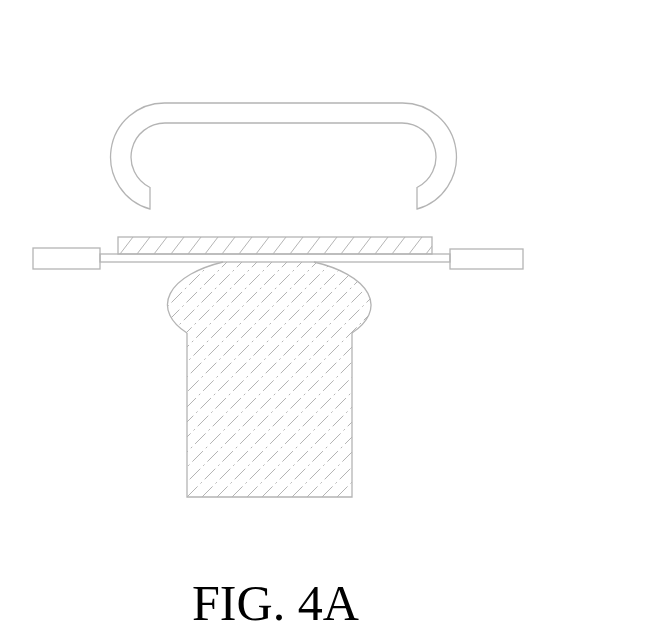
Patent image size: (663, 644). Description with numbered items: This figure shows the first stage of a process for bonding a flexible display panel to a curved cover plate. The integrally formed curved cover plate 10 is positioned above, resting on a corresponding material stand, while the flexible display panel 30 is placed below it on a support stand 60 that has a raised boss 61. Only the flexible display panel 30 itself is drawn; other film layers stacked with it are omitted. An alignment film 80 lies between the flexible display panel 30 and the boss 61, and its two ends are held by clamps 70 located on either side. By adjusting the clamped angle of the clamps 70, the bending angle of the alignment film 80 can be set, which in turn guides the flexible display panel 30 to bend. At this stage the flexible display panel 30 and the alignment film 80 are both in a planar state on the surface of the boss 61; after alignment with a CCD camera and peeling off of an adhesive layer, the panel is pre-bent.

The curved cover plate 10 is at (305, 112).
The flexible display panel 30 is at (313, 246).
The support stand 60 is at (332, 404).
The boss 61 is at (172, 290).
The clamps 70 is at (477, 260).
The alignment film 80 is at (427, 258).